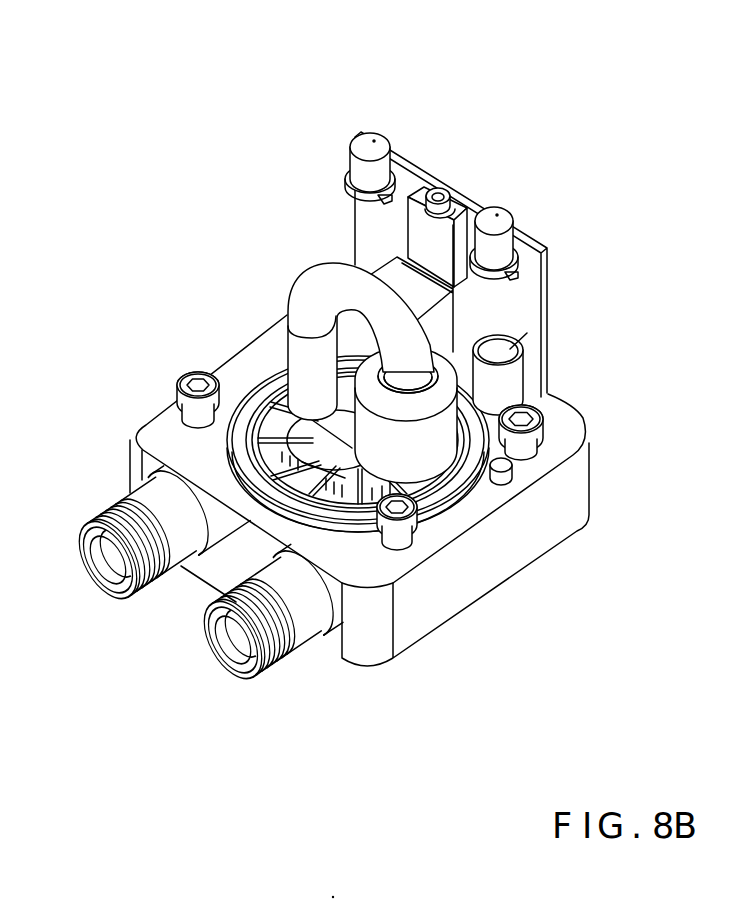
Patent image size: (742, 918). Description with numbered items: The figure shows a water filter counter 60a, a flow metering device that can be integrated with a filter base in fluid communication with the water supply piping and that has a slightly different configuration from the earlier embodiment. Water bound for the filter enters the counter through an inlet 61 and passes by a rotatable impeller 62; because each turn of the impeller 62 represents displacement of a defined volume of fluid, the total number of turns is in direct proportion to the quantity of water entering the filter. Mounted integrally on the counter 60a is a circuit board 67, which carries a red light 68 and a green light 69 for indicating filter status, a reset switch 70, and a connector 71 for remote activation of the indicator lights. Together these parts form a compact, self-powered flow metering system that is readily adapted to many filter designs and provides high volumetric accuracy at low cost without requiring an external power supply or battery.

The water filter counter 60a is at (567, 559).
The inlet 61 is at (148, 498).
The rotatable impeller 62 is at (330, 490).
The circuit board 67 is at (552, 320).
The red light 68 is at (500, 223).
The green light 69 is at (373, 147).
The reset switch 70 is at (472, 207).
The connector 71 is at (435, 193).